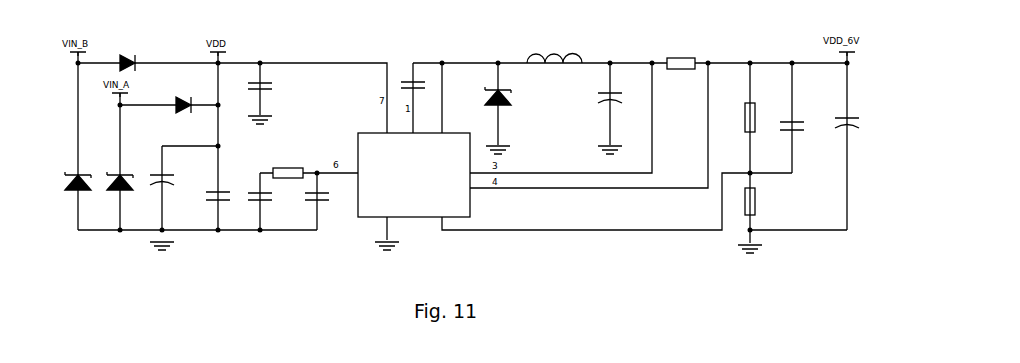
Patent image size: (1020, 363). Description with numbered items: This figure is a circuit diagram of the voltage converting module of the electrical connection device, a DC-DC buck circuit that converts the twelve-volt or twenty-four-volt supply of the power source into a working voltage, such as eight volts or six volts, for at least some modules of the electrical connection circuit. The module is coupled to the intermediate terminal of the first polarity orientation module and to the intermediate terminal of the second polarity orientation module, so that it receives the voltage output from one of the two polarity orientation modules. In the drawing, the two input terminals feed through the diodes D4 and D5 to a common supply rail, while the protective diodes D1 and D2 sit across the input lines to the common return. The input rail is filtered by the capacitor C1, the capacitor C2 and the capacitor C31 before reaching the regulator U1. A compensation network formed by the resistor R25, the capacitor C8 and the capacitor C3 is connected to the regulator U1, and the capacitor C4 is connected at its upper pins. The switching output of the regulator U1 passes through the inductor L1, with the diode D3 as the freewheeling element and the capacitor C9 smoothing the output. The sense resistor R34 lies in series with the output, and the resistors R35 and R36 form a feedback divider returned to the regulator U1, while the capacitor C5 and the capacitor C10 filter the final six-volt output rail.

The TVS diode 3KASMC18 D1 is at (73, 165).
The TVS diode 3KASMC18 D2 is at (114, 165).
The diode 3KASMC1E D3 is at (519, 90).
The diode D4 is at (127, 55).
The diode D5 is at (183, 99).
The capacitor 100uF/50V C1 is at (173, 185).
The capacitor 100nF C2 is at (227, 176).
The capacitor 100nF C3 is at (323, 209).
The capacitor 100nF C4 is at (426, 87).
The capacitor 100nF C5 is at (805, 123).
The capacitor 2.2nF C8 is at (272, 201).
The capacitor 470uF/16V C9 is at (590, 106).
The capacitor 100uF/16V C10 is at (826, 133).
The capacitor 100nF C31 is at (272, 85).
The resistor 8.2K R25 is at (288, 161).
The resistor 51mR R34 is at (694, 56).
The resistor 8K R35 is at (759, 117).
The resistor 1K R36 is at (759, 201).
The inductor 22uH L1 is at (554, 62).
The regulator IC AX3030 U1 is at (430, 175).